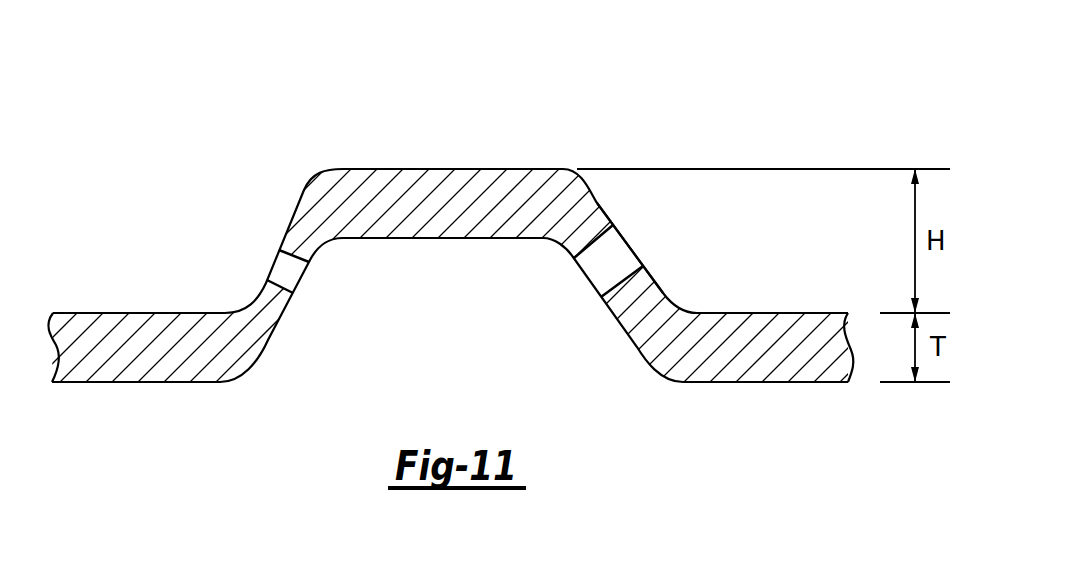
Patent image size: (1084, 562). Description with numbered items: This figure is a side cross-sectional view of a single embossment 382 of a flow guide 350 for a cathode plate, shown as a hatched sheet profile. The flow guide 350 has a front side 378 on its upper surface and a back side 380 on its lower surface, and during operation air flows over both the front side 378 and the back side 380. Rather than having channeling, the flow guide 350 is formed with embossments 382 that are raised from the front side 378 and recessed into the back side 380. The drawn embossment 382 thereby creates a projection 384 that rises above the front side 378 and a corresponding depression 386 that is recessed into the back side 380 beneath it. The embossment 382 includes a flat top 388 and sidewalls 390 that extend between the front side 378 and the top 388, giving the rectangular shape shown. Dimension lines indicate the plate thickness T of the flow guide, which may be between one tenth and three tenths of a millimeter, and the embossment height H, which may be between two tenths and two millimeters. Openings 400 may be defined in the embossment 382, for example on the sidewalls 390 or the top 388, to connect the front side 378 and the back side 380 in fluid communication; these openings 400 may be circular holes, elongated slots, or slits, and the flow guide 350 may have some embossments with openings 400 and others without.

The flow guide 350 is at (555, 56).
The front side 378 is at (140, 313).
The back side 380 is at (140, 383).
The embossment 382 is at (380, 173).
The projection 384 is at (560, 173).
The depression 386 is at (384, 329).
The top 388 is at (452, 173).
The sidewall 390 is at (627, 243).
The opening 400 is at (282, 291).